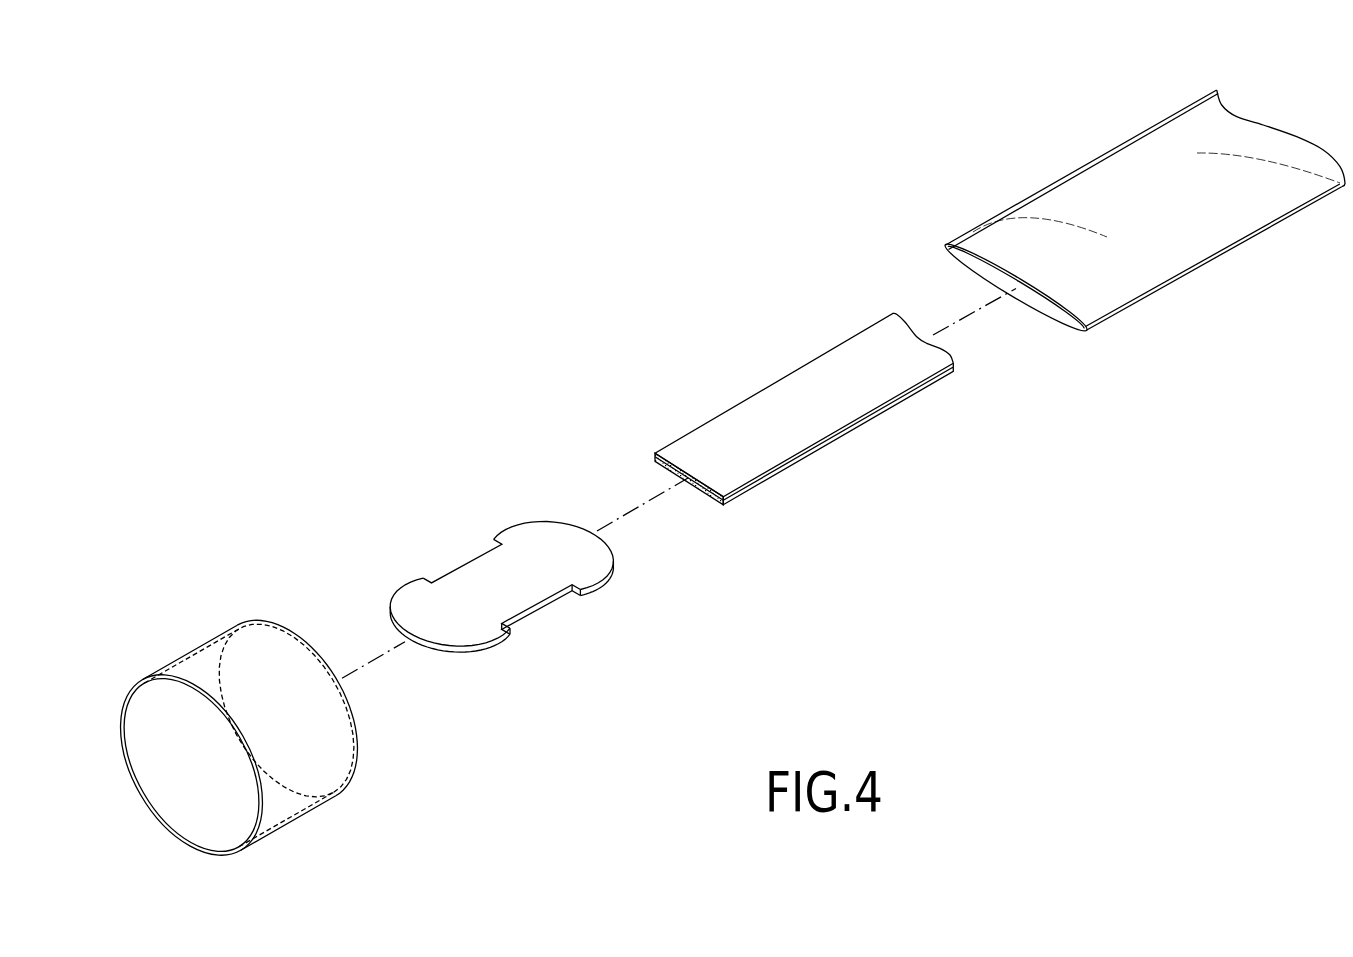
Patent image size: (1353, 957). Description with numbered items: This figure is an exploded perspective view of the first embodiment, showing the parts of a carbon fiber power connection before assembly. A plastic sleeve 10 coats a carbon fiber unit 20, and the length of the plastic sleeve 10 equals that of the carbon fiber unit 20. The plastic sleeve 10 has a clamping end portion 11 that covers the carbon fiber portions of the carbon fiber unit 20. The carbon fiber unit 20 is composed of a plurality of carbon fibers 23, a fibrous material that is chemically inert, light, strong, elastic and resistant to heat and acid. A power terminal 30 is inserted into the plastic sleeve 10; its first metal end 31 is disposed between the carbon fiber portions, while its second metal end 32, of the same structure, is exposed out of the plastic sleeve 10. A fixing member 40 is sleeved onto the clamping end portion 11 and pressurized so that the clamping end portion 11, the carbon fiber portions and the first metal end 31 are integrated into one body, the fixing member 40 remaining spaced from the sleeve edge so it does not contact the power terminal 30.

The plastic sleeve 10 is at (1142, 232).
The clamping end portion 11 is at (1087, 313).
The carbon fiber unit 20 is at (804, 432).
The carbon fibers 23 is at (733, 498).
The power terminal 30 is at (473, 543).
The first metal end 31 is at (553, 532).
The second metal end 32 is at (412, 620).
The fixing member 40 is at (178, 660).